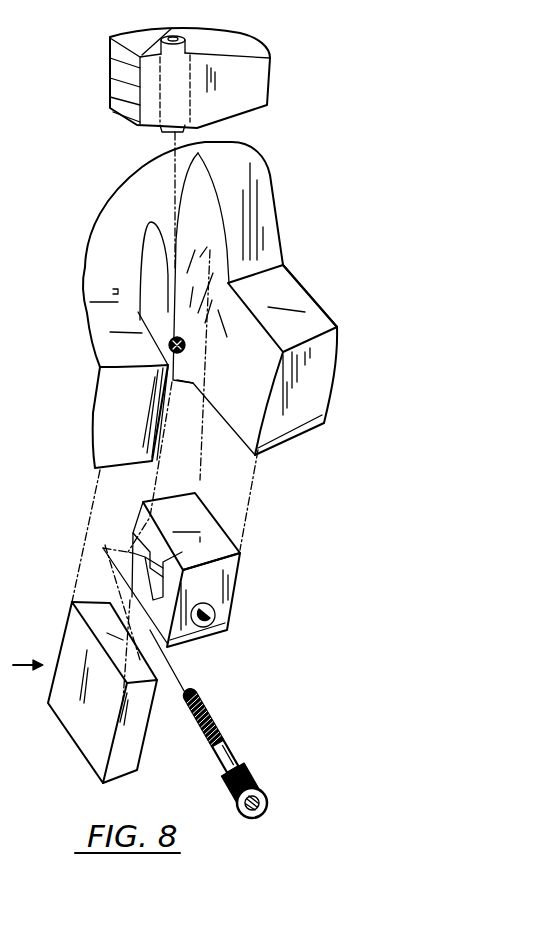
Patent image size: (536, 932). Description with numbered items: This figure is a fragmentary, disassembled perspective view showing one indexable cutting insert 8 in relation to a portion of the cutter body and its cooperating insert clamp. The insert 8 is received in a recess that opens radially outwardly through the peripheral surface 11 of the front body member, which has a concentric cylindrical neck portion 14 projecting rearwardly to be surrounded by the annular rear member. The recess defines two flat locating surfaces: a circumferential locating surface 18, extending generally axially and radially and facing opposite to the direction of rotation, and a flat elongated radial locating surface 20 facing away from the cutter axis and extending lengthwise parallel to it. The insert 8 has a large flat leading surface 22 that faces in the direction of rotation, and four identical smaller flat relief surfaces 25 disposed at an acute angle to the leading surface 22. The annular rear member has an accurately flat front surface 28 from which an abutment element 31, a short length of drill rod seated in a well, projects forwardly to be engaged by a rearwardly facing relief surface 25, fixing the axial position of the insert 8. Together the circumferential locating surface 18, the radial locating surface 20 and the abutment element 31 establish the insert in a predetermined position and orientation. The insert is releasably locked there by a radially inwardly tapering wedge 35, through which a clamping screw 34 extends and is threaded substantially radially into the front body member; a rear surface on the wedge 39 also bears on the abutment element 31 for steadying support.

The indexable cutting insert 8 is at (21, 667).
The peripheral surface 11 is at (315, 392).
The neck portion 14 is at (255, 197).
The circumferential locating surface 18 is at (147, 308).
The radial locating surface 20 is at (153, 283).
The leading surface 22 is at (76, 731).
The relief surfaces 25 is at (93, 603).
The front surface of rear body member 28 is at (143, 135).
The abutment element 31 is at (200, 127).
The clamping screw 34 is at (220, 728).
The wedge 35 is at (223, 603).
The wedge rear surface 39 is at (205, 535).